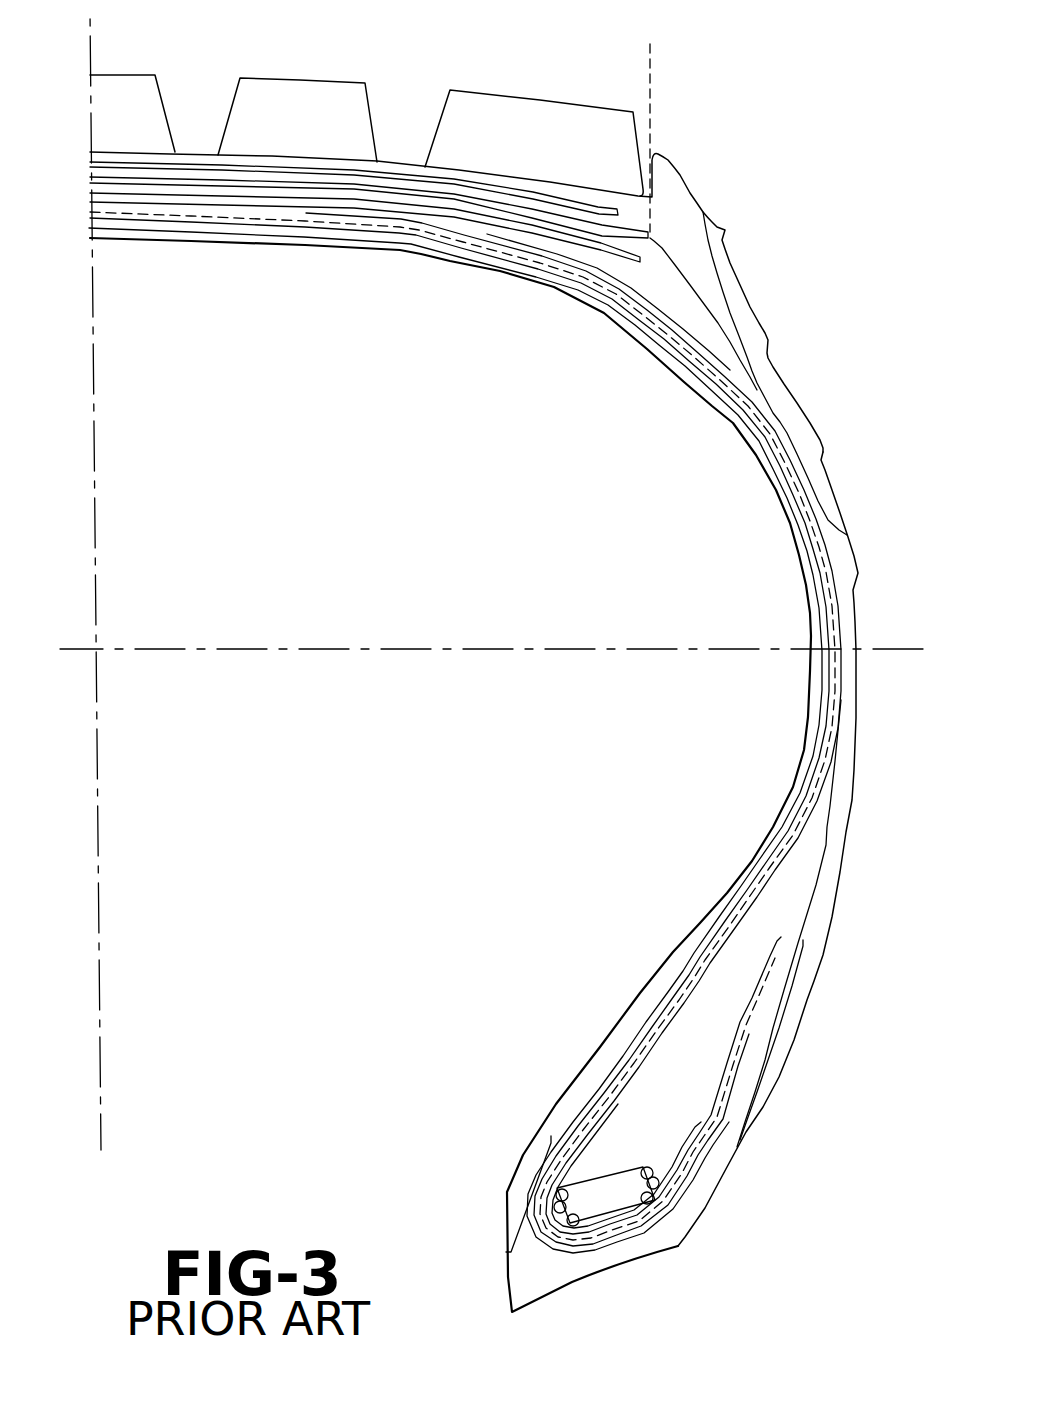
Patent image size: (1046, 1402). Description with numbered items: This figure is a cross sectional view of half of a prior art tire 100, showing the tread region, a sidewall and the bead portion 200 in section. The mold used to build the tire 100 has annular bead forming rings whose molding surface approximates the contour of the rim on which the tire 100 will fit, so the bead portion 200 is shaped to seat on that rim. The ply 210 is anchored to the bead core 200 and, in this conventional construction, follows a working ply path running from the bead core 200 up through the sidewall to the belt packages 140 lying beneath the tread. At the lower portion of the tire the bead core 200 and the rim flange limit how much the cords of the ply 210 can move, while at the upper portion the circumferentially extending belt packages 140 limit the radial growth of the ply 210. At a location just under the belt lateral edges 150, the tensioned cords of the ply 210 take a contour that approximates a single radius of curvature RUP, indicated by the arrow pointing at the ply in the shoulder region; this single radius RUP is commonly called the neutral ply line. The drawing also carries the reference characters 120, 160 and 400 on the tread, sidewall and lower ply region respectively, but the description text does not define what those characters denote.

The tire 100 is at (740, 181).
The tread 120 is at (537, 135).
The belt packages 140 is at (248, 200).
The belt lateral edges 150 is at (651, 46).
The sidewall 160 is at (848, 533).
The bead core 200 is at (610, 1200).
The ply 210 is at (787, 836).
The ply turn-up / apex 400 is at (773, 905).
The single radius of curvature RUP is at (616, 308).